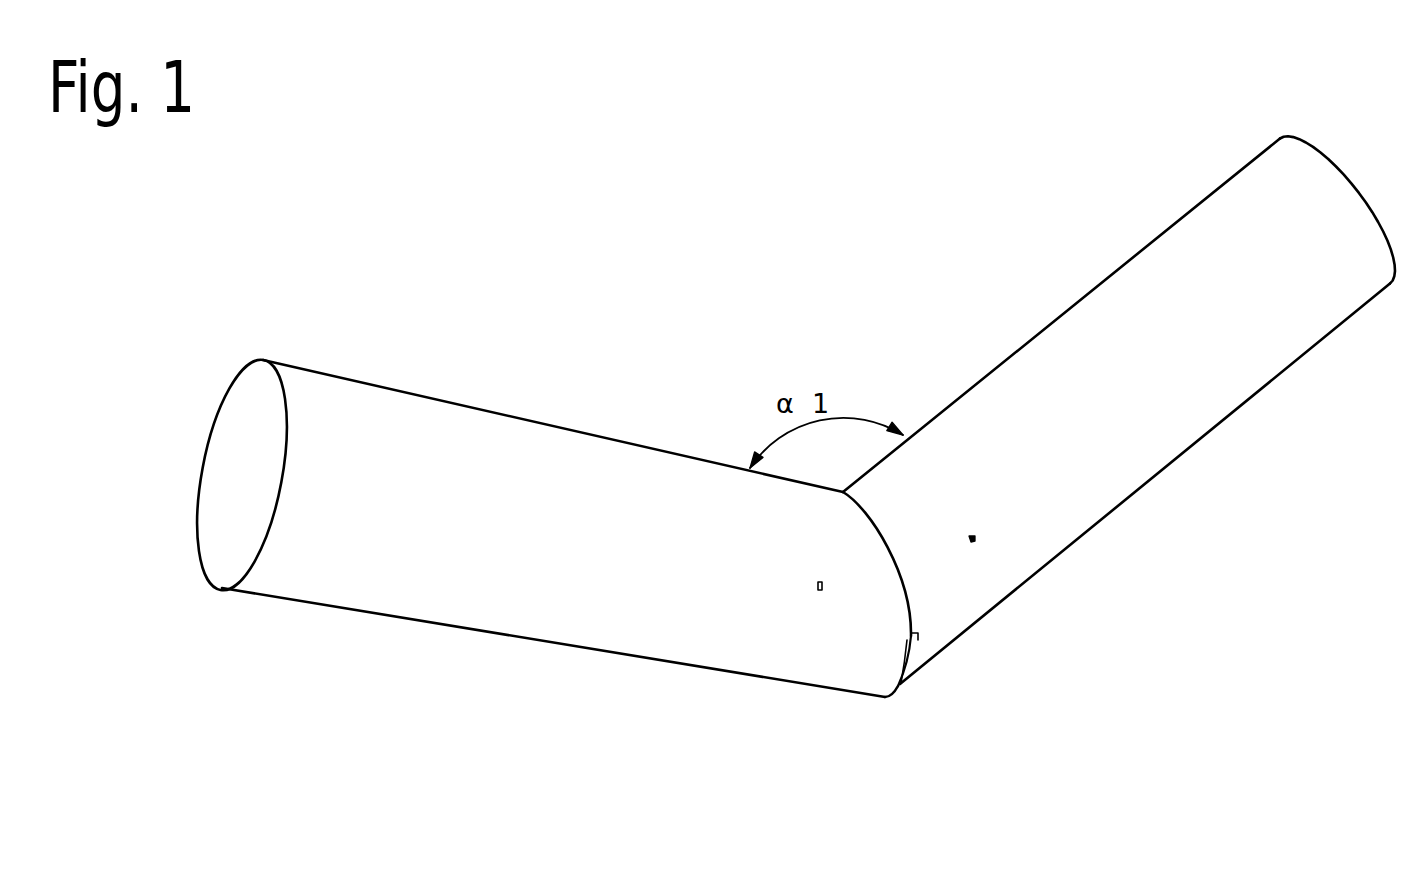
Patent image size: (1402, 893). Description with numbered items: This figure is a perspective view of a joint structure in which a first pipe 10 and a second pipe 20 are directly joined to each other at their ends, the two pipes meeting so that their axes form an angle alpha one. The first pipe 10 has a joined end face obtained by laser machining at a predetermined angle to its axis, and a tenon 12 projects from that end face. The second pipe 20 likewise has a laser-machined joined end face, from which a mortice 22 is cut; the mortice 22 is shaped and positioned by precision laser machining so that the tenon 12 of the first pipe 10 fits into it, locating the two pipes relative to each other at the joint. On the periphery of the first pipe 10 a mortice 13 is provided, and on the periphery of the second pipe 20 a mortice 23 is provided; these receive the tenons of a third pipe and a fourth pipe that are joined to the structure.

The first pipe 10 is at (522, 430).
The tenon 12 is at (910, 641).
The mortice 13 is at (820, 590).
The second pipe 20 is at (1118, 285).
The mortice 22 is at (918, 640).
The mortice 23 is at (974, 539).